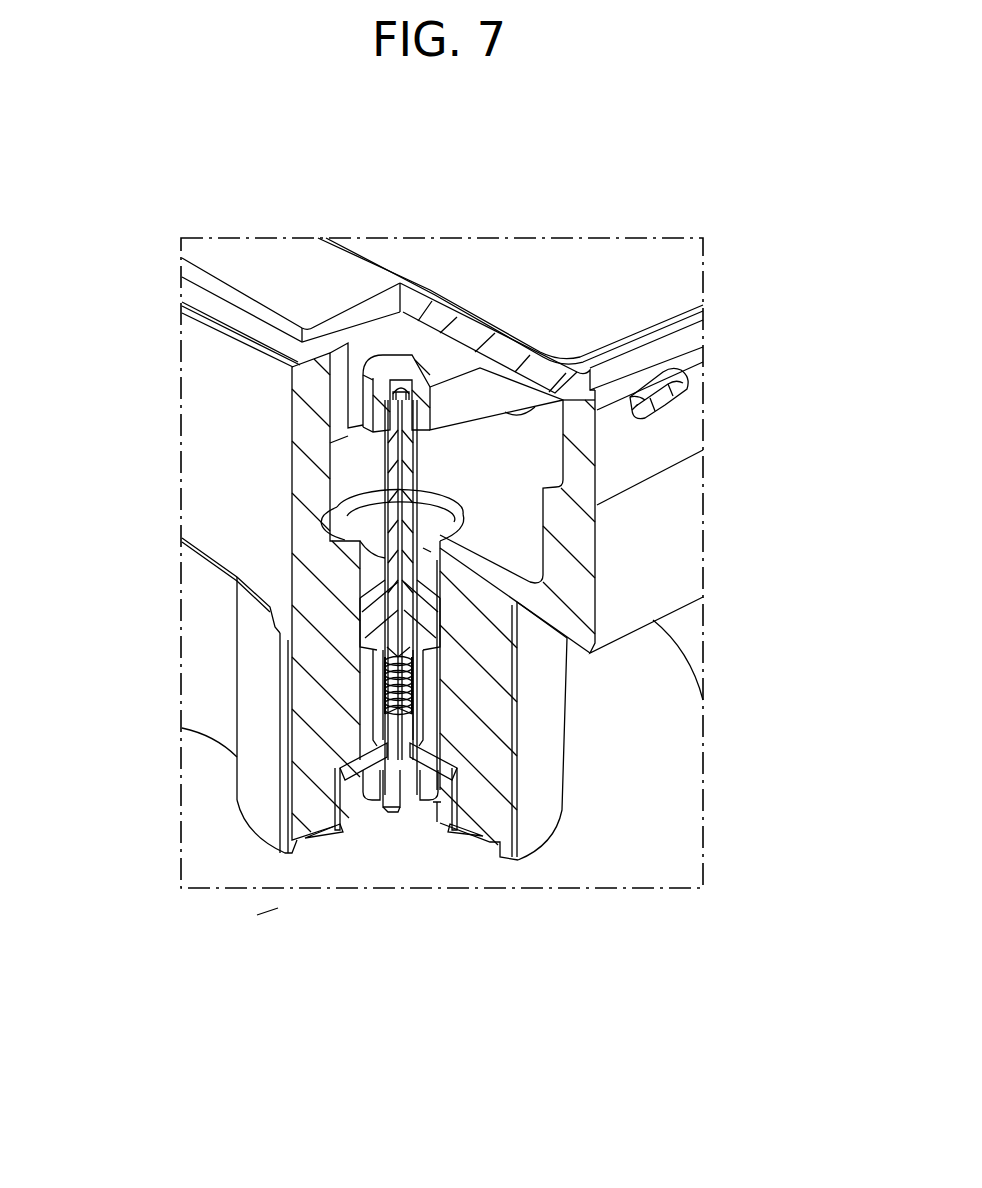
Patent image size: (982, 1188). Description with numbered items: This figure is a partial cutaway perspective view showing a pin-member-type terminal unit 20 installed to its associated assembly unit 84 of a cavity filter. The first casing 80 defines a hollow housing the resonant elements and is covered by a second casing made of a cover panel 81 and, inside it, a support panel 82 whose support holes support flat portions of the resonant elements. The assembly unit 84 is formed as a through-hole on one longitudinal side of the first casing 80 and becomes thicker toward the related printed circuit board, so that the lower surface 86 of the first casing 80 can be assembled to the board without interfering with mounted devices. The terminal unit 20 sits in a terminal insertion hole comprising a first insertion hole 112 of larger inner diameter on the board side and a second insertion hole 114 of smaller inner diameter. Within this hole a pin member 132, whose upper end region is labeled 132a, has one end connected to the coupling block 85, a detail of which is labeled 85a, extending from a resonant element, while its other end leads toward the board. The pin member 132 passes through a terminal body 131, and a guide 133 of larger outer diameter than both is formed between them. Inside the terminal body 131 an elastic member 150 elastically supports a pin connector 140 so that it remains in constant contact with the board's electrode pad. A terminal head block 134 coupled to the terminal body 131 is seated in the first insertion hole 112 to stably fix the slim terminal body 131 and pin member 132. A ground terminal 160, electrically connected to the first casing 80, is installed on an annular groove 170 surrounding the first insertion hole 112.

The terminal unit 20 is at (328, 514).
The first casing 80 is at (687, 507).
The cover panel 81 is at (623, 287).
The support panel 82 is at (687, 350).
The assembly unit 84 is at (255, 817).
The coupling block 85 is at (455, 360).
The boss opening 85a is at (400, 377).
The lower surface 86 is at (655, 625).
The first insertion hole 112 is at (437, 805).
The second insertion hole 114 is at (427, 550).
The terminal body 131 is at (420, 682).
The pin member 132 is at (413, 470).
The shaft head 132a is at (397, 377).
The guide 133 is at (370, 622).
The terminal head block 134 is at (360, 790).
The pin connector 140 is at (390, 813).
The elastic member 150 is at (425, 712).
The ground terminal 160 is at (333, 827).
The annular groove 170 is at (303, 840).